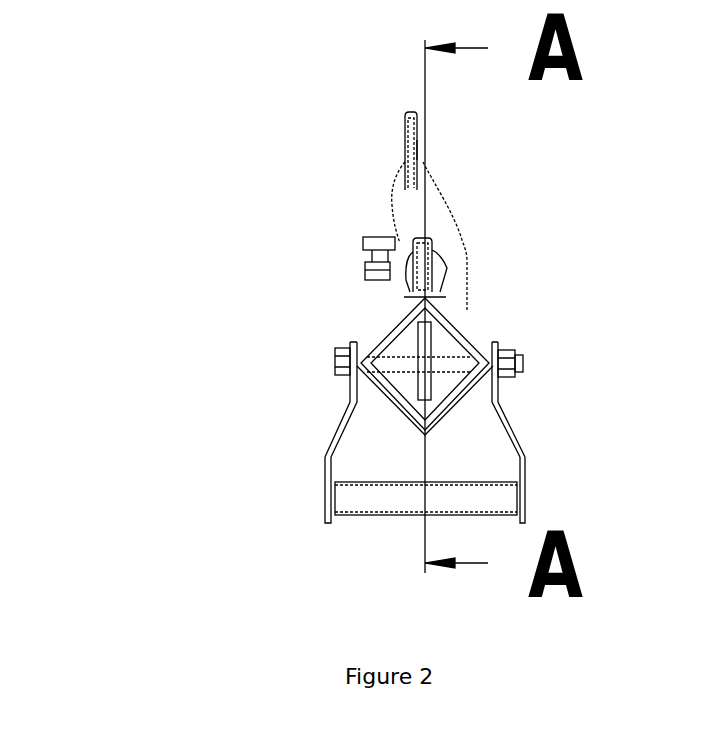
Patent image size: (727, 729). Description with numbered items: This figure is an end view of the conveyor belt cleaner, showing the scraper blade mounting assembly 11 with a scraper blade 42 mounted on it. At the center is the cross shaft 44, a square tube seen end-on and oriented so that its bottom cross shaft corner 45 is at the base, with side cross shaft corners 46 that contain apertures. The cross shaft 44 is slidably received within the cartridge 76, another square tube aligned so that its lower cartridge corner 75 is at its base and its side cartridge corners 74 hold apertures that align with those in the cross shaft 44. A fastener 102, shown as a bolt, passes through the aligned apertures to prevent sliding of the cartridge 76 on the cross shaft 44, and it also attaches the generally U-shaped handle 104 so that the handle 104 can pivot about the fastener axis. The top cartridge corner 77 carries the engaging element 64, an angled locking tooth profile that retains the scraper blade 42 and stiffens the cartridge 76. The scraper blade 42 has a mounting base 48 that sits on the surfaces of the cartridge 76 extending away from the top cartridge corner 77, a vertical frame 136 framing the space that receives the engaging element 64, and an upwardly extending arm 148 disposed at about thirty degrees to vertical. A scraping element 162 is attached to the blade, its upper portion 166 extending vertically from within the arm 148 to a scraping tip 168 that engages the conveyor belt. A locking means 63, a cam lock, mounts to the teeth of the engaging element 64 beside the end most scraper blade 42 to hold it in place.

The scraper blade mounting assembly 11 is at (271, 381).
The scraper blade 42 is at (440, 220).
The cross shaft 44 is at (458, 376).
The bottom cross shaft corner 45 is at (425, 410).
The side cross shaft corners 46 is at (477, 362).
The mounting base 48 is at (466, 311).
The locking means 63 is at (375, 253).
The engaging element 64 is at (420, 252).
The side cartridge corners 74 is at (343, 360).
The lower cartridge corner 75 is at (425, 432).
The cartridge 76 is at (448, 407).
The top cartridge corner 77 is at (404, 298).
The fastener 102 is at (360, 363).
The handle 104 is at (325, 463).
The vertical frame 136 is at (417, 267).
The arm 148 is at (458, 245).
The scraping element 162 is at (425, 150).
The upper portion 166 is at (410, 138).
The scraping tip 168 is at (405, 106).